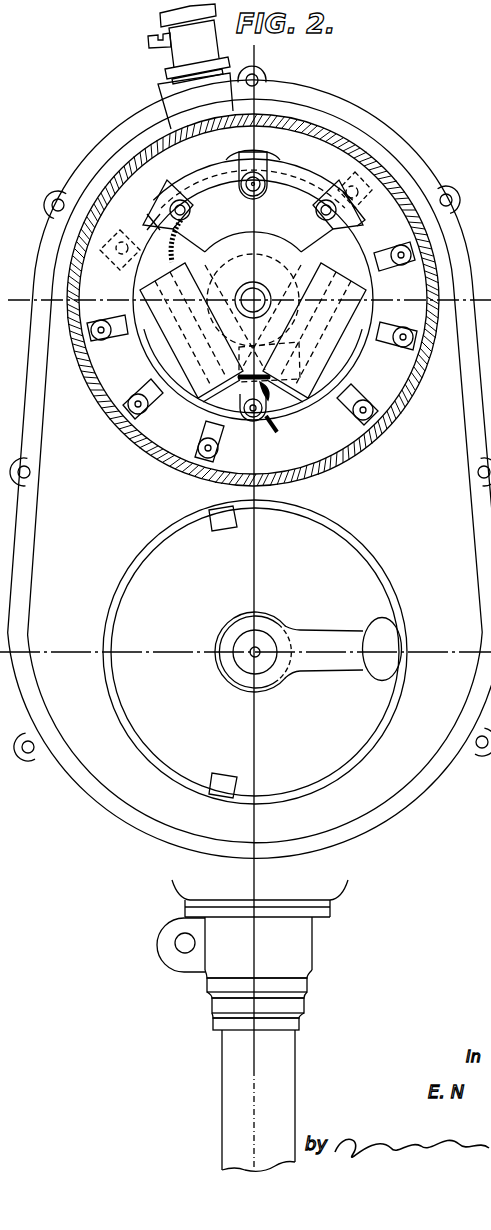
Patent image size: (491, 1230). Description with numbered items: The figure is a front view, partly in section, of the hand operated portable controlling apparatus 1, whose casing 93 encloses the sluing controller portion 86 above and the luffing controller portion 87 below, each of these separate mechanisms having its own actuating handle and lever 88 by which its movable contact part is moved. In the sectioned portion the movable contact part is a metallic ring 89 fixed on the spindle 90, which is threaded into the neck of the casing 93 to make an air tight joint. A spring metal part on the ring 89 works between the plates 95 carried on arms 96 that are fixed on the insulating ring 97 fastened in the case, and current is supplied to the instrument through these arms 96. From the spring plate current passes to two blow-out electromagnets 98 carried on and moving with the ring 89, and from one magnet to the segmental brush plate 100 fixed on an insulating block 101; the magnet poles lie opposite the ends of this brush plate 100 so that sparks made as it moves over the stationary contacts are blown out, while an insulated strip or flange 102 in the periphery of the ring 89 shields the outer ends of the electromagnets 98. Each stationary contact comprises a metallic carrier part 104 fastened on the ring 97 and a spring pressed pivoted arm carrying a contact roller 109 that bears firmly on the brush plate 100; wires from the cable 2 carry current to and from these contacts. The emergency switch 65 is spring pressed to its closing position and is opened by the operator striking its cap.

The housing casing 1 is at (249, 519).
The cable 2 is at (267, 1085).
The emergency switch 65 is at (160, 25).
The sluing controller portion 86 is at (253, 289).
The luffing controller portion 87 is at (255, 652).
The actuating handles and levers 88 is at (308, 652).
The metallic ring 89 is at (167, 358).
The spindle 90 is at (259, 292).
The casing 93 is at (150, 147).
The plates 95 is at (216, 280).
The arms 96 is at (128, 270).
The insulating ring 97 is at (253, 303).
The blow-out electromagnets 98 is at (150, 308).
The segmental brush plate 100 is at (253, 165).
The insulating block 101 is at (273, 208).
The insulated strip or flange 102 is at (150, 243).
The metallic carrier part 104 is at (388, 260).
The contact roller 109 is at (104, 339).